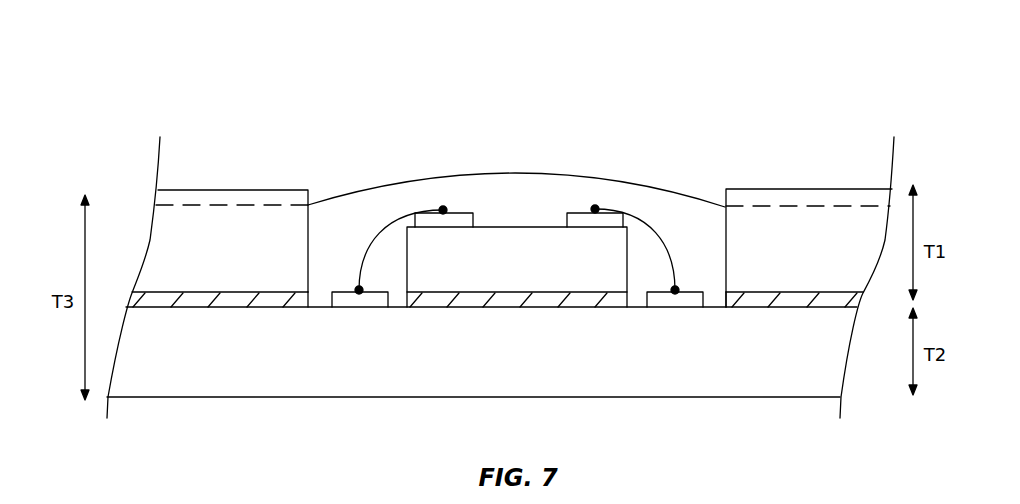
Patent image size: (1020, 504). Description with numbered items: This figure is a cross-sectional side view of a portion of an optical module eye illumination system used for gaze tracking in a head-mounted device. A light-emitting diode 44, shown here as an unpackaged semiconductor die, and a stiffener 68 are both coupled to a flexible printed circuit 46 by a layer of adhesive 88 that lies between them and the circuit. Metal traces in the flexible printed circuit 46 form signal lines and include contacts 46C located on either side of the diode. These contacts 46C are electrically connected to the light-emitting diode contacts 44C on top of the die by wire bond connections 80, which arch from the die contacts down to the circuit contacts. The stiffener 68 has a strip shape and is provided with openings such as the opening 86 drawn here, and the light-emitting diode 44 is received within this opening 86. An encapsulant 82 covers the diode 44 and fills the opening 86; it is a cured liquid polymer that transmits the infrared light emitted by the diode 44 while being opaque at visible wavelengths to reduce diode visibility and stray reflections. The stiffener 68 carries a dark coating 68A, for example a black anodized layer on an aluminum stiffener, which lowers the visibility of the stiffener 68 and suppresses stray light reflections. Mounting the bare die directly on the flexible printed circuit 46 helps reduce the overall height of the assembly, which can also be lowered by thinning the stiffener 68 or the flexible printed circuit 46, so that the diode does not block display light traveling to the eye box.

The light-emitting diode 44 is at (520, 247).
The light-emitting diode contacts 44C is at (463, 220).
The flexible printed circuit 46 is at (802, 387).
The contacts 46C is at (362, 303).
The stiffener 68 is at (202, 217).
The coating 68A is at (260, 200).
The wire bond connections 80 is at (398, 210).
The encapsulant 82 is at (353, 192).
The opening 86 is at (682, 215).
The adhesive 88 is at (232, 303).